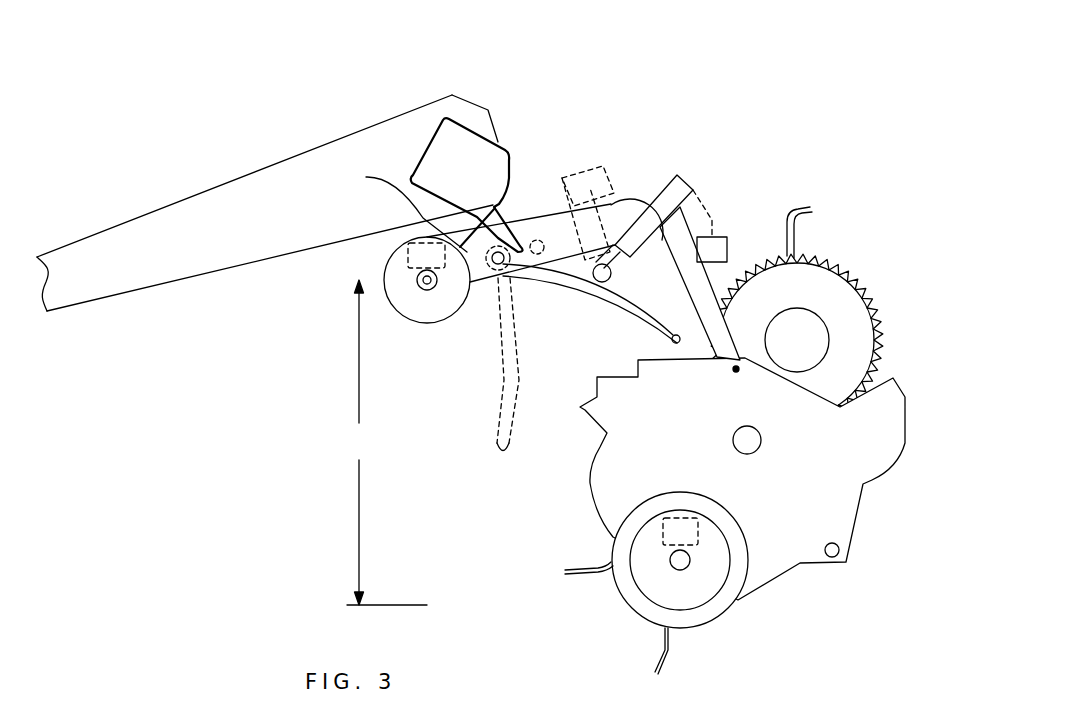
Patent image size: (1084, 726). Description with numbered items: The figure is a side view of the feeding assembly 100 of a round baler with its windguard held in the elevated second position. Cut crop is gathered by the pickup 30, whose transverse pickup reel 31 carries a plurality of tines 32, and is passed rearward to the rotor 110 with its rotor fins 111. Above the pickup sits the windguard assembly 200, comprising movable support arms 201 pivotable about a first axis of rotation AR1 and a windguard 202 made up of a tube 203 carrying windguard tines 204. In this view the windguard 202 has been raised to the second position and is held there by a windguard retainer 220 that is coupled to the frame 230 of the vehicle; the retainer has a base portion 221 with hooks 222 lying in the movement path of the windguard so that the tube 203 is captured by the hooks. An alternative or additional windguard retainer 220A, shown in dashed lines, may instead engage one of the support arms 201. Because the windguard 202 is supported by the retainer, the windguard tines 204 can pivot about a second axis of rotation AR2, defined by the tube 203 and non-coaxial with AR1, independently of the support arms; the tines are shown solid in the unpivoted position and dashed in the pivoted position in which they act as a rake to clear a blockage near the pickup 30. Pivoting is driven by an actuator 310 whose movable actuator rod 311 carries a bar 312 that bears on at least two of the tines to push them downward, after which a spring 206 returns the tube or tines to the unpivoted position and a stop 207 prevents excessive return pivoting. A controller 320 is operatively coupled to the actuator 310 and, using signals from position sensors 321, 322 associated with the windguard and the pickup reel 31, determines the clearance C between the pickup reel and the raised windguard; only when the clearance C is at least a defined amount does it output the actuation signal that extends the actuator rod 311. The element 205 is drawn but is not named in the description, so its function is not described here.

The feeding assembly 100 is at (290, 452).
The rotor 110 is at (876, 277).
The rotor fins 111 is at (811, 211).
The windguard assembly 200 is at (520, 285).
The support arms 201 is at (662, 180).
The windguard 202 is at (417, 280).
The tube 203 is at (492, 272).
The windguard tines 204 is at (503, 402).
The spring 205 is at (393, 208).
The spring 206 is at (537, 240).
The stop 207 is at (553, 283).
The windguard retainer 220 is at (431, 139).
The windguard retainer 220A is at (601, 166).
The base portion 221 is at (461, 150).
The hook 222 is at (500, 207).
The frame 230 is at (207, 208).
The pickup 30 is at (628, 613).
The pickup reel 31 is at (620, 587).
The tines 32 is at (667, 647).
The actuator 310 is at (681, 181).
The actuator rod 311 is at (612, 270).
The bar 312 is at (622, 238).
The controller 320 is at (727, 237).
The position sensor 321 is at (410, 245).
The position sensor 322 is at (698, 537).
The first axis of rotation AR1 is at (736, 372).
The second axis of rotation AR2 is at (498, 258).
The clearance C is at (387, 442).